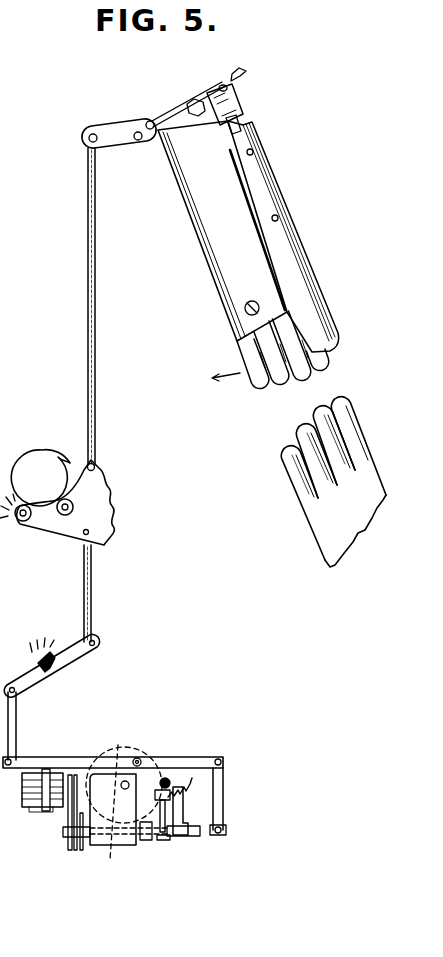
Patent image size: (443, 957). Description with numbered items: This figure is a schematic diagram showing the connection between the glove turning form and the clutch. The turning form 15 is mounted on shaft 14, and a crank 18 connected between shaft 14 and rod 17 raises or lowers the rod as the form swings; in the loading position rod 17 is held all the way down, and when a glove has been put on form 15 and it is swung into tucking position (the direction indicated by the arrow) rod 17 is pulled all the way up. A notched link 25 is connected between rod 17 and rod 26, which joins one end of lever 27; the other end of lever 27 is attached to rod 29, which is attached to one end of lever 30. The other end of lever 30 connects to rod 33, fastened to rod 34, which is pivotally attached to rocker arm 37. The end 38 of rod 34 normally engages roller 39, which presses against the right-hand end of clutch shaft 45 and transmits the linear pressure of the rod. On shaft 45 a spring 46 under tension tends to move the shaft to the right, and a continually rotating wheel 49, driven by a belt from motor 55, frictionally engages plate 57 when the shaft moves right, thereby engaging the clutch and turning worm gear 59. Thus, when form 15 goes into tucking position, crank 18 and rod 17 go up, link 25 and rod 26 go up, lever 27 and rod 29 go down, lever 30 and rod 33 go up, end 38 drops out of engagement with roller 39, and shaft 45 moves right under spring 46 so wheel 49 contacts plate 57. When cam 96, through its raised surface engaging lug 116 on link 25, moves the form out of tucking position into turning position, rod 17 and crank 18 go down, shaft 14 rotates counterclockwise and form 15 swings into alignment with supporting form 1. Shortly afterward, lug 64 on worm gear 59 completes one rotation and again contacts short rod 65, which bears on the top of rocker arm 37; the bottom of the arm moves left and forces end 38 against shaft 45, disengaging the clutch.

The supporting form 1 is at (312, 513).
The shaft 14 is at (246, 72).
The turning form 15 is at (203, 238).
The rod 17 is at (94, 296).
The crank 18 is at (110, 127).
The notched link 25 is at (70, 536).
The rod 26 is at (92, 575).
The lever 27 is at (75, 659).
The rod 29 is at (16, 711).
The lever 30 is at (60, 763).
The rod 33 is at (225, 795).
The rod 34 is at (228, 830).
The rocker arm 37 is at (187, 823).
The end of rod 38 is at (167, 836).
The roller 39 is at (163, 842).
The clutch shaft 45 is at (117, 813).
The spring 46 is at (148, 841).
The wheel 49 is at (68, 839).
The motor 55 is at (28, 807).
The plate 57 is at (81, 845).
The worm gear 59 is at (124, 784).
The lug 64 is at (150, 790).
The short rod 65 is at (166, 780).
The cam 96 is at (34, 462).
The lug 116 is at (54, 533).